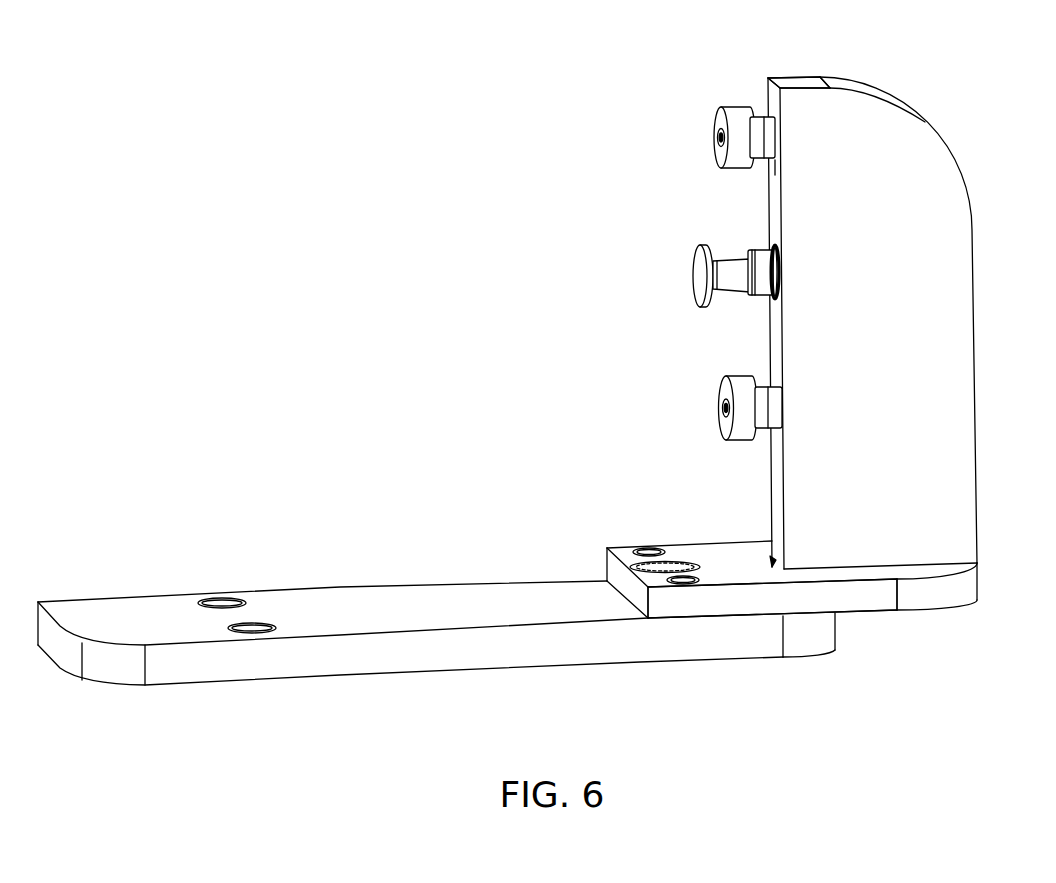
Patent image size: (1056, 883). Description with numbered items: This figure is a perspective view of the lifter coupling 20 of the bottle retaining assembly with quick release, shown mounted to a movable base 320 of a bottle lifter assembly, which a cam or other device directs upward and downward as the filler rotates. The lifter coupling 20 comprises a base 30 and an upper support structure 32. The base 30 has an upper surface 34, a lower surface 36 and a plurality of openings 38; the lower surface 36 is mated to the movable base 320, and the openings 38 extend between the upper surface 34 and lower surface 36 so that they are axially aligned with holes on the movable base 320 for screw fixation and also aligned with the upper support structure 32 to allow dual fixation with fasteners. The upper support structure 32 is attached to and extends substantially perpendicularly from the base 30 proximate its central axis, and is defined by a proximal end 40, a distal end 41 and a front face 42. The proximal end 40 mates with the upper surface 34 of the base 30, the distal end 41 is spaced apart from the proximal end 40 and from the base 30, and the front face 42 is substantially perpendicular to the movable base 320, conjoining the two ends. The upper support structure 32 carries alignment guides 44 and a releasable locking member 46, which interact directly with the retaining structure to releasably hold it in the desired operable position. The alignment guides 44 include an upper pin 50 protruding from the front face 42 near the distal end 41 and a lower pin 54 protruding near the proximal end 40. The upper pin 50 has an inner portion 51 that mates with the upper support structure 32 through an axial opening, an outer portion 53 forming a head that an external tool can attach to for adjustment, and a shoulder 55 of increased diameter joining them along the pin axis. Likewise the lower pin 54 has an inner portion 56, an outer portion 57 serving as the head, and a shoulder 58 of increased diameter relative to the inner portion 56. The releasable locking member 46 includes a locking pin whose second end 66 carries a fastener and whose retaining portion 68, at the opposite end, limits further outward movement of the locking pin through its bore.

The lifter coupling 20 is at (568, 295).
The base 30 is at (894, 640).
The upper support structure 32 is at (973, 452).
The upper surface 34 is at (710, 542).
The lower surface 36 is at (717, 600).
The openings 38 is at (648, 549).
The proximal end 40 is at (928, 562).
The distal end 41 is at (813, 77).
The front face 42 is at (776, 203).
The alignment guides 44 is at (691, 90).
The releasable locking member 46 is at (783, 267).
The upper pin 50 is at (689, 137).
The inner portion 51 is at (762, 116).
The outer portion 53 is at (731, 106).
The shoulder 55 is at (764, 130).
The lower pin 54 is at (690, 407).
The inner portion 56 is at (781, 402).
The outer portion 57 is at (727, 376).
The shoulder 58 is at (763, 430).
The second end 66 is at (706, 245).
The retaining portion 68 is at (733, 291).
The movable base 320 is at (114, 687).